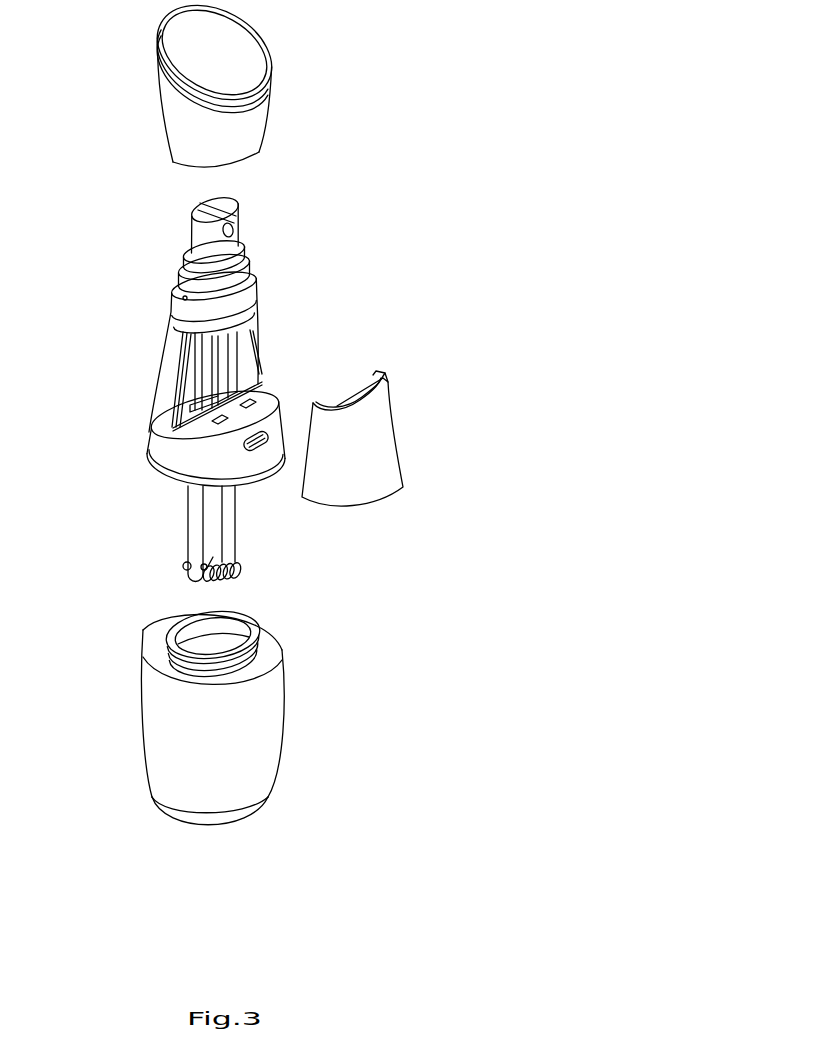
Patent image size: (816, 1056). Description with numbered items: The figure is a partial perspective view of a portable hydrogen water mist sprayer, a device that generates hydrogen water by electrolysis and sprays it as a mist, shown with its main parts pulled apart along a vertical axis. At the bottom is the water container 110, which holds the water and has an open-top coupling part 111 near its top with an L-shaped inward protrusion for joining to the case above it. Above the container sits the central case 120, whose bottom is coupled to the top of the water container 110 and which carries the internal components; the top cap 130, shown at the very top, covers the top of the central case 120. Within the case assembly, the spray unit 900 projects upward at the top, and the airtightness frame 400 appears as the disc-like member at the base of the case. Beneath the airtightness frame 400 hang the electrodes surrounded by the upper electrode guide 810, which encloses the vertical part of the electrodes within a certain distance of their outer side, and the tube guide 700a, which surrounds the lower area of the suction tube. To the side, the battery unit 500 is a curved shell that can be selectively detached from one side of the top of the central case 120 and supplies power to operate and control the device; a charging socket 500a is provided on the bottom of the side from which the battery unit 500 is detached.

The water container 110 is at (144, 725).
The open-top coupling part 111 is at (168, 640).
The central case 120 is at (163, 380).
The top cap 130 is at (250, 117).
The airtightness frame 400 is at (148, 458).
The battery unit 500 is at (408, 401).
The charging socket 500a is at (262, 450).
The tube guide 700a is at (205, 566).
The upper electrode guide 810 is at (230, 518).
The spray unit 900 is at (181, 237).